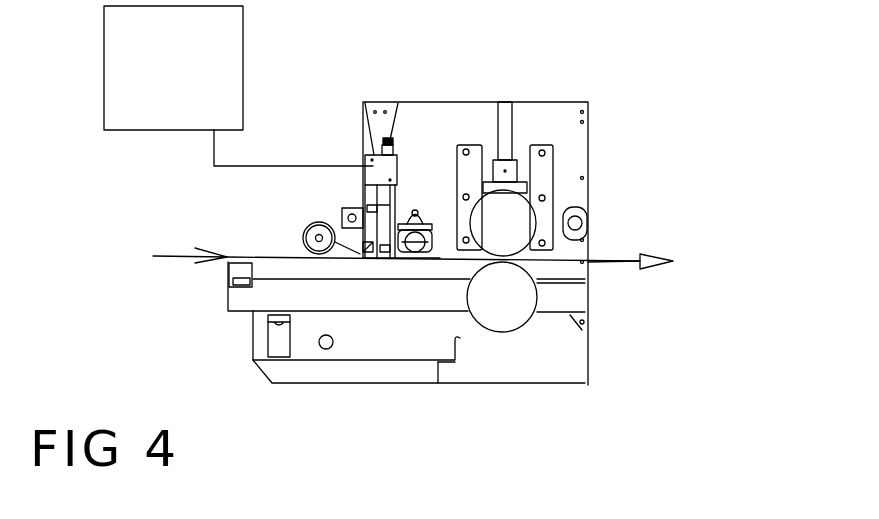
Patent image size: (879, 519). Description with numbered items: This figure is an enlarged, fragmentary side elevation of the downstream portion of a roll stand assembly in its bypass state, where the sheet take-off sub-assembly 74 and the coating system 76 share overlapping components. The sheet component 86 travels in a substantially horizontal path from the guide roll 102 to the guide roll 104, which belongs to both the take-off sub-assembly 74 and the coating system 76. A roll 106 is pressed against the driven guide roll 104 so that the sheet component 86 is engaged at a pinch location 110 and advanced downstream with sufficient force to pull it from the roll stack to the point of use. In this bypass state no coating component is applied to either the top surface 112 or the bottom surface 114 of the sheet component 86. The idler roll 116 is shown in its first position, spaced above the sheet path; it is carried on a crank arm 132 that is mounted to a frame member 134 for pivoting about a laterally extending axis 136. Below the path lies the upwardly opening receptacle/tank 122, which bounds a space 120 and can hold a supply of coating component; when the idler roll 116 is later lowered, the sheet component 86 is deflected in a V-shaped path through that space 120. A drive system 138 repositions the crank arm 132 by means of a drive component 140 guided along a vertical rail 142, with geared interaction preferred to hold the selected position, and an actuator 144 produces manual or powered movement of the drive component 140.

The sheet take-off sub-assembly 74 is at (563, 205).
The coating system 76 is at (460, 197).
The sheet component 86 is at (567, 253).
The guide roll 102 is at (247, 260).
The guide roll 104 is at (513, 318).
The roll 106 is at (522, 242).
The pinch location 110 is at (503, 268).
The top surface 112 is at (273, 253).
The bottom surface 114 is at (290, 260).
The idler roll 116 is at (327, 214).
The space 120 is at (363, 338).
The receptacle/tank 122 is at (438, 362).
The crank arm 132 is at (363, 268).
The frame member 134 is at (442, 141).
The laterally extending axis 136 is at (427, 265).
The drive system 138 is at (402, 195).
The drive component 140 is at (363, 103).
The vertical rail 142 is at (397, 143).
The actuator 144 is at (170, 75).